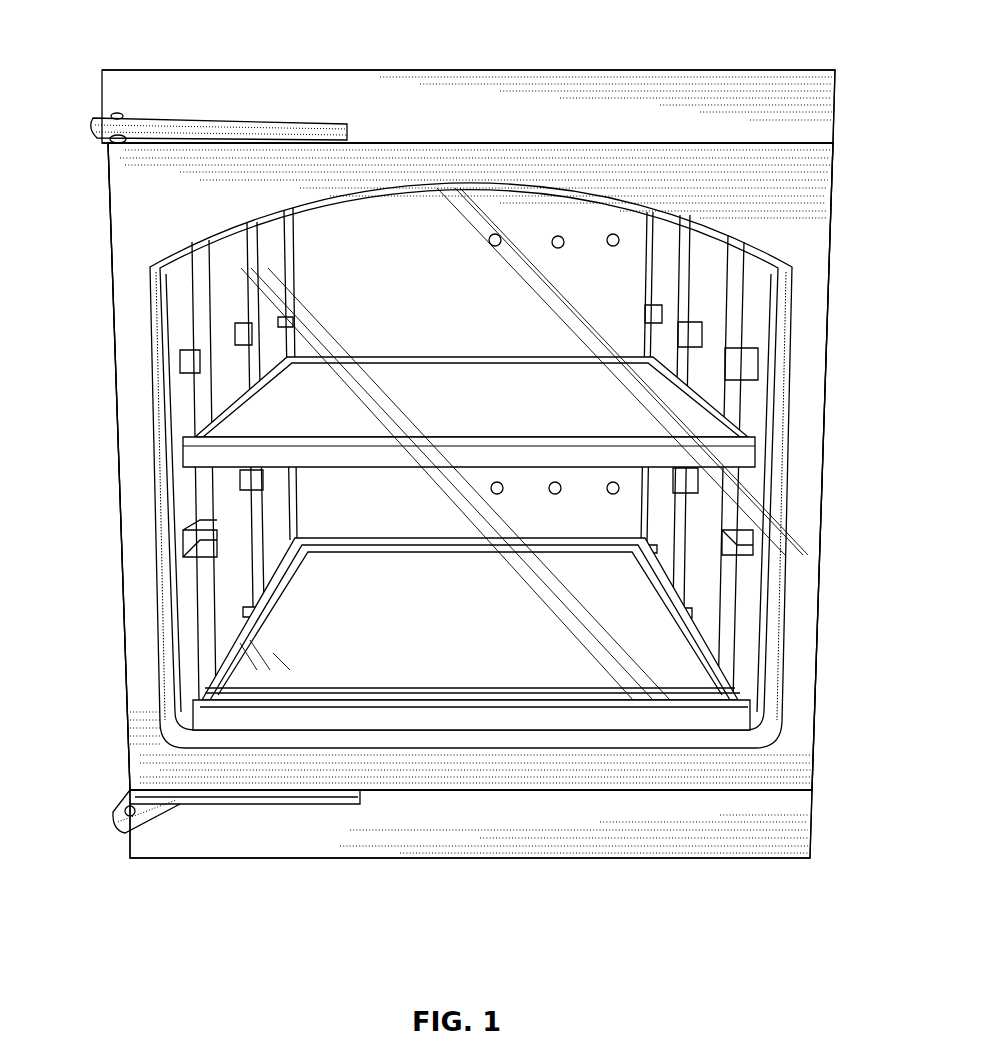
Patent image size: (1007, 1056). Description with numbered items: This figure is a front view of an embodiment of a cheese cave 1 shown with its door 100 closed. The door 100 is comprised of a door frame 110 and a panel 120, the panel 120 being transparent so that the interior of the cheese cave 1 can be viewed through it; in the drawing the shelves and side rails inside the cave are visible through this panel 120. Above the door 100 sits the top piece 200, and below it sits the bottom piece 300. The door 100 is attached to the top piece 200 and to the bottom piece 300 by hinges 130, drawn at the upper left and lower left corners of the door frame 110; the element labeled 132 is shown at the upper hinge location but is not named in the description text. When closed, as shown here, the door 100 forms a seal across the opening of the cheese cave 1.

The cheese cave 1 is at (449, 434).
The door 100 is at (310, 175).
The door frame 110 is at (167, 212).
The panel 120 is at (360, 287).
The hinges 130 is at (143, 798).
The handle 132 is at (150, 134).
The top piece 200 is at (688, 92).
The bottom piece 300 is at (708, 837).